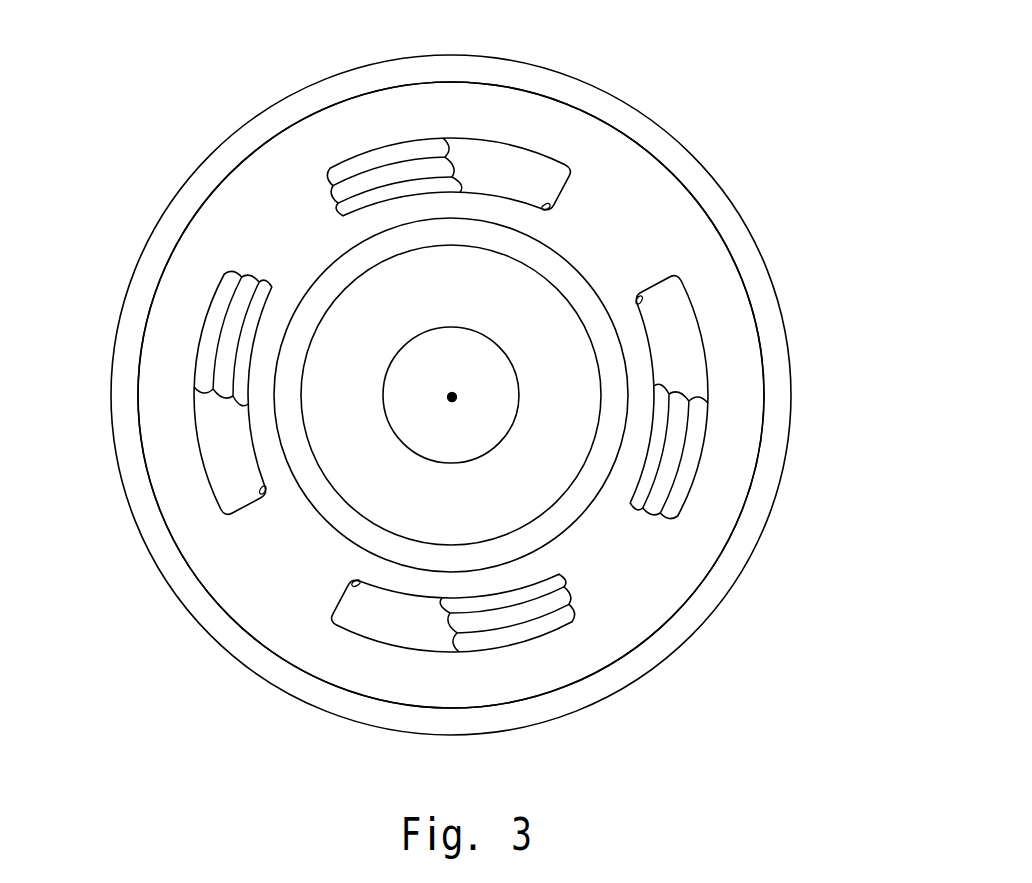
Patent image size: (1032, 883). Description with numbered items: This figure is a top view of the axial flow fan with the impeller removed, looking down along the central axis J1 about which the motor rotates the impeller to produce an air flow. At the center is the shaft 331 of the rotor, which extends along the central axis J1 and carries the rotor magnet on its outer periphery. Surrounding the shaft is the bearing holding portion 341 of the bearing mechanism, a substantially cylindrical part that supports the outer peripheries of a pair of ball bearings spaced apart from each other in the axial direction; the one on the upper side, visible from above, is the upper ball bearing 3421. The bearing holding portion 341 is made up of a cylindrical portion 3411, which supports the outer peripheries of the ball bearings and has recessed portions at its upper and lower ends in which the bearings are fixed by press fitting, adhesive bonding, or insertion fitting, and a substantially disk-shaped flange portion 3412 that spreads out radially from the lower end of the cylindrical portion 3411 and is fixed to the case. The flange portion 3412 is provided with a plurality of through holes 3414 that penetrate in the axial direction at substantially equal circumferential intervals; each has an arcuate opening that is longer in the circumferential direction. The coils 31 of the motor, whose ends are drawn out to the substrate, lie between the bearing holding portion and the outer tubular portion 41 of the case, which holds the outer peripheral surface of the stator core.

The coils 31 is at (210, 366).
The shaft 331 is at (397, 383).
The upper ball bearing 3421 is at (328, 437).
The tubular portion 41 is at (650, 133).
The bearing holding portion 341 is at (843, 100).
The cylindrical portion 3411 is at (570, 275).
The flange portion 3412 is at (677, 237).
The through holes 3414 is at (690, 339).
The central axis J1 is at (455, 395).